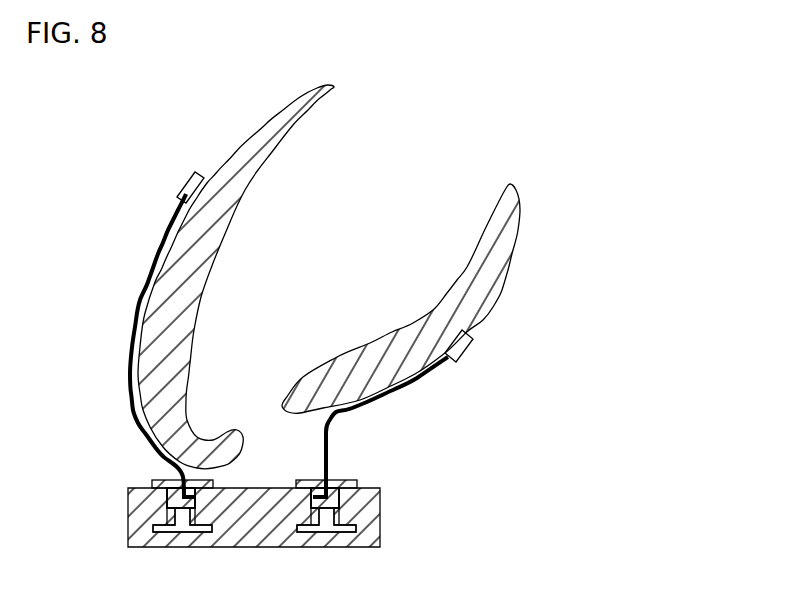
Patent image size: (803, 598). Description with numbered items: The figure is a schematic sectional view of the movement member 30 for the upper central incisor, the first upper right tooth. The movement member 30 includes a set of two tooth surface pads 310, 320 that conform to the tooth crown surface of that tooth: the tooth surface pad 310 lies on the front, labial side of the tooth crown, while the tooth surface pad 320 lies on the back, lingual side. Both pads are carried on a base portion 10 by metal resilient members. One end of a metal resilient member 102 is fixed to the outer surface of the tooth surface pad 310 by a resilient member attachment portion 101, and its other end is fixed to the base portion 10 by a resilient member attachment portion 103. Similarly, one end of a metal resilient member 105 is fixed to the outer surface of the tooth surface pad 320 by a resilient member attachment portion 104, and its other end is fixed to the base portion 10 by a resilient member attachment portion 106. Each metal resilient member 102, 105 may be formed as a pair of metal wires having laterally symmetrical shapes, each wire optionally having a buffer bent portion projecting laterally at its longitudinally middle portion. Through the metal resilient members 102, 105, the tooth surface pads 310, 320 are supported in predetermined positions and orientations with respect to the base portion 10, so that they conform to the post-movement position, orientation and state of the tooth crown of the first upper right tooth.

The movement member 30 is at (308, 283).
The base portion 10 is at (380, 530).
The tooth surface pad 310 is at (208, 276).
The tooth surface pad 320 is at (438, 298).
The resilient member attachment portion 101 is at (178, 187).
The metal resilient member 102 is at (130, 373).
The resilient member attachment portion 103 is at (163, 481).
The resilient member attachment portion 104 is at (467, 352).
The metal resilient member 105 is at (377, 397).
The resilient member attachment portion 106 is at (343, 481).